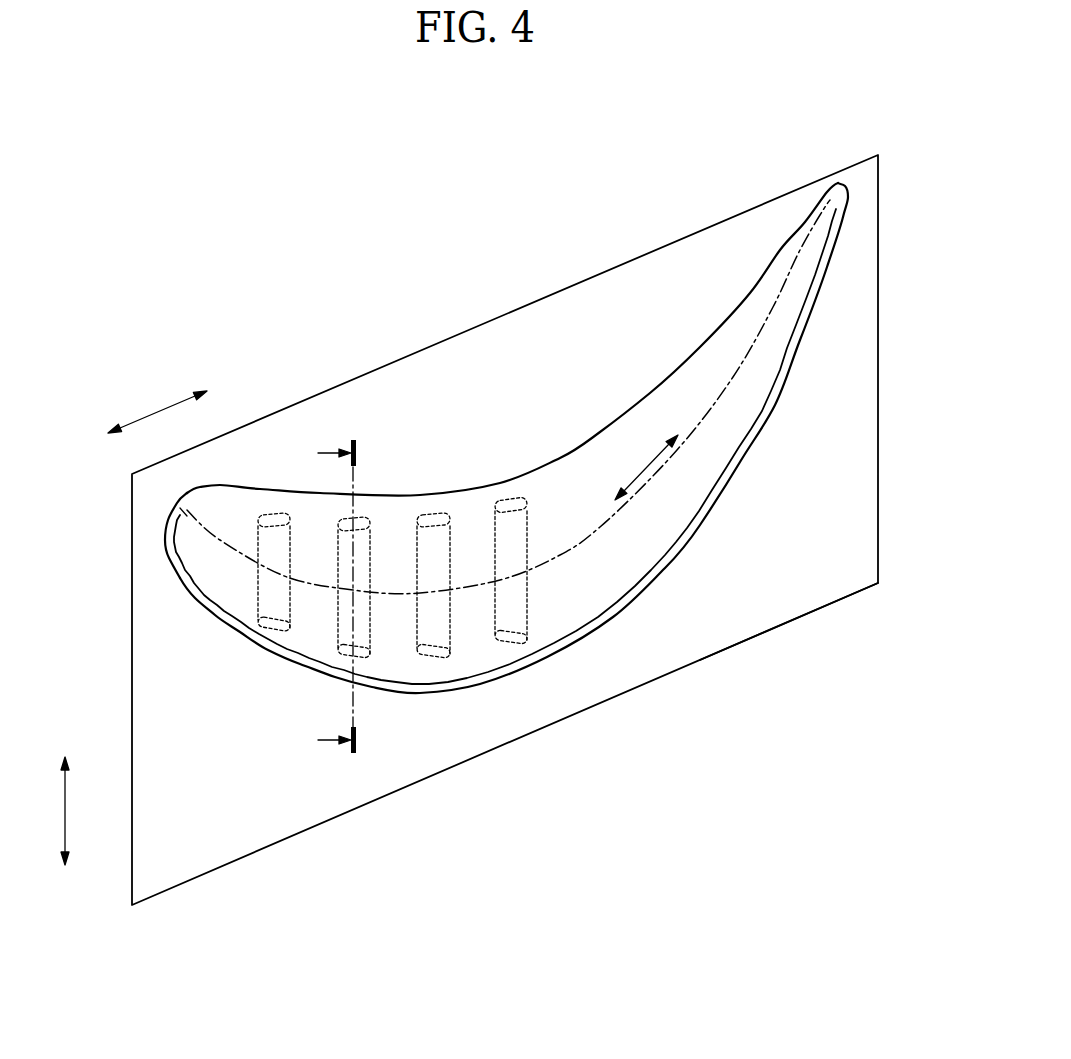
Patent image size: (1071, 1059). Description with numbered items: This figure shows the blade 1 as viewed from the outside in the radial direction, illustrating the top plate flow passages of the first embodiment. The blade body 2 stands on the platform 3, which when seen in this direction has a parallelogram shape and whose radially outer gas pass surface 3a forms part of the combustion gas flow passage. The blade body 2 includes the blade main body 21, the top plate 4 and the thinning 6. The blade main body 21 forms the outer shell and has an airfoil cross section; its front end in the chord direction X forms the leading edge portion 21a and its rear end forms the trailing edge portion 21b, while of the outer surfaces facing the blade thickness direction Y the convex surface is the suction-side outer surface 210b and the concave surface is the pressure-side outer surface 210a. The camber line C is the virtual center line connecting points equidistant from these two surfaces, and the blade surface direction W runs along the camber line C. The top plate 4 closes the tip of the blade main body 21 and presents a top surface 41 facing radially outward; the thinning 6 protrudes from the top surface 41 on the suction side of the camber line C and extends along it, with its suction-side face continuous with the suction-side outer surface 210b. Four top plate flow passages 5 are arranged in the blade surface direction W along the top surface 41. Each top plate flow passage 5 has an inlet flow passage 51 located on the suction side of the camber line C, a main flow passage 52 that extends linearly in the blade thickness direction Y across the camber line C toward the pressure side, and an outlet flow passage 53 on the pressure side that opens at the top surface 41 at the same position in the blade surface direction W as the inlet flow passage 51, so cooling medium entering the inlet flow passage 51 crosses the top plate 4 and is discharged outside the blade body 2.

The blade 1 is at (496, 452).
The blade body 2 is at (496, 493).
The platform 3 is at (546, 530).
The gas pass surface 3a is at (817, 587).
The top plate 4 is at (571, 602).
The top plate flow passage 5 is at (303, 475).
The thinning 6 is at (487, 686).
The blade main body 21 is at (479, 493).
The leading edge portion 21a is at (180, 509).
The trailing edge portion 21b is at (845, 185).
The top surface 41 is at (698, 375).
The inlet flow passage 51 is at (263, 637).
The main flow passage 52 is at (263, 586).
The outlet flow passage 53 is at (268, 514).
The pressure-side outer surface 210a is at (625, 413).
The suction-side outer surface 210b is at (647, 588).
The camber line C is at (788, 298).
The blade surface direction W is at (646, 467).
The chord direction X is at (157, 401).
The blade thickness direction Y is at (56, 811).